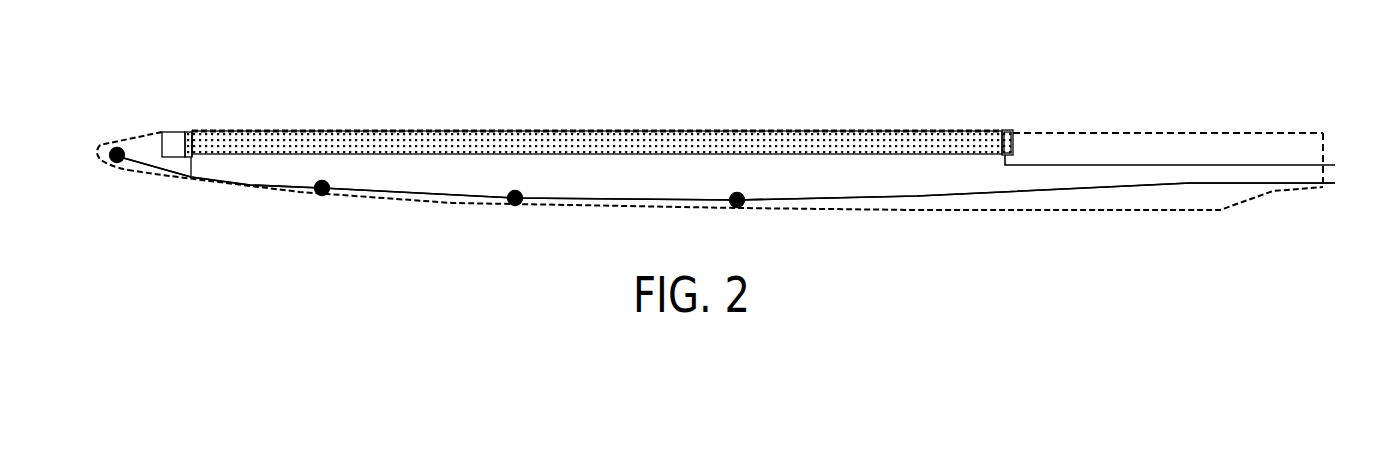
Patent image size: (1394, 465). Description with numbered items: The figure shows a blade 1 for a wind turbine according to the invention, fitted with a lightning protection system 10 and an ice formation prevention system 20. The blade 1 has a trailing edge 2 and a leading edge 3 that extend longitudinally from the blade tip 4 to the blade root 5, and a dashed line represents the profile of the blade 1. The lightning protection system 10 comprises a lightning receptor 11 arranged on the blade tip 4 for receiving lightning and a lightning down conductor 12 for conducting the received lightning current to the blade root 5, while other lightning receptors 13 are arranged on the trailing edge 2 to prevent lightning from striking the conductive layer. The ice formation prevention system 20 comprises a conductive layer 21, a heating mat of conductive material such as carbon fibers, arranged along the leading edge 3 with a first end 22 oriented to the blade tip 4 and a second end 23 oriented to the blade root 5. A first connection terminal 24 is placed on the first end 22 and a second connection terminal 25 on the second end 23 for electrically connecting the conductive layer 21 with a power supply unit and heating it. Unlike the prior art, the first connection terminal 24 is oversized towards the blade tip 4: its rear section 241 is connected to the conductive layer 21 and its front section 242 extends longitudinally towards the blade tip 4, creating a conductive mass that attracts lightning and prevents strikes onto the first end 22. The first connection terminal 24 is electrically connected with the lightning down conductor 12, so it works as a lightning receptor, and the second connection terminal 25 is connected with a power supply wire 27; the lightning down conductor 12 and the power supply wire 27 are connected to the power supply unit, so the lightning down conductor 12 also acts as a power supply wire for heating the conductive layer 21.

The blade 1 is at (1125, 153).
The trailing edge 2 is at (452, 203).
The leading edge 3 is at (490, 131).
The blade tip 4 is at (98, 157).
The blade root 5 is at (1323, 145).
The lightning protection system 10 is at (286, 214).
The lightning receptor 11 is at (122, 168).
The lightning down conductor 12 is at (917, 198).
The other lightning receptors 13 is at (327, 193).
The ice formation prevention system 20 is at (824, 120).
The conductive layer 21 is at (640, 145).
The first end 22 is at (188, 138).
The second end 23 is at (1010, 140).
The first connection terminal 24 is at (172, 143).
The second connection terminal 25 is at (1015, 143).
The power supply wire 27 is at (1213, 163).
The rear section 241 is at (193, 142).
The front section 242 is at (158, 135).